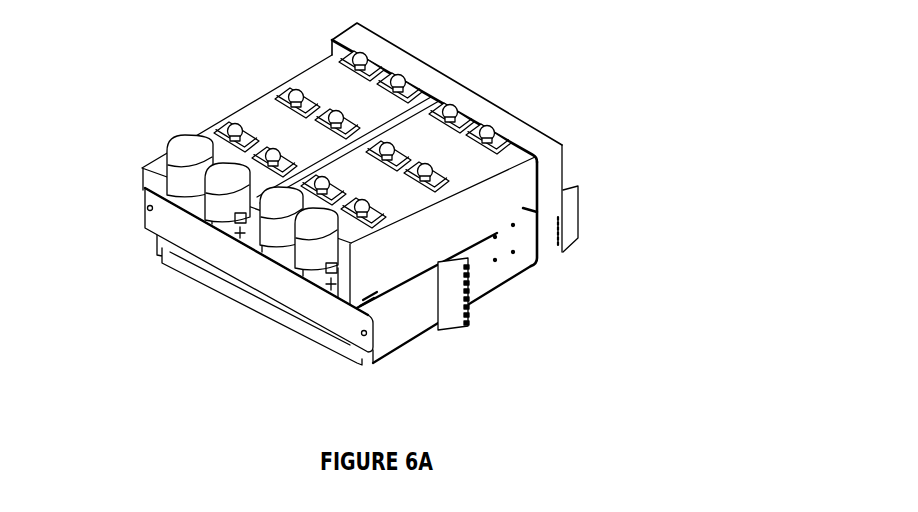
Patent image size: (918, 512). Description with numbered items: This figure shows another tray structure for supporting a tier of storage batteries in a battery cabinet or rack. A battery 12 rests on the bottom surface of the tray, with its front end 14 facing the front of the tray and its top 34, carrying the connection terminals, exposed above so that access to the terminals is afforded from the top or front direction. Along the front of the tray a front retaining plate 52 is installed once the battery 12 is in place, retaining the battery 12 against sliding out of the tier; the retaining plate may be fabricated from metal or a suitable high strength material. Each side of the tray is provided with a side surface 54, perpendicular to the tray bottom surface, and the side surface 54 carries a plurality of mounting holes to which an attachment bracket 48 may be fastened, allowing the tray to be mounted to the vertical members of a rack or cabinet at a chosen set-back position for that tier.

The battery 12 is at (503, 192).
The front end 14 is at (210, 209).
The top 34 is at (330, 82).
The attachment bracket 48 is at (450, 293).
The front retaining plate 52 is at (322, 310).
The side surface 54 is at (407, 315).